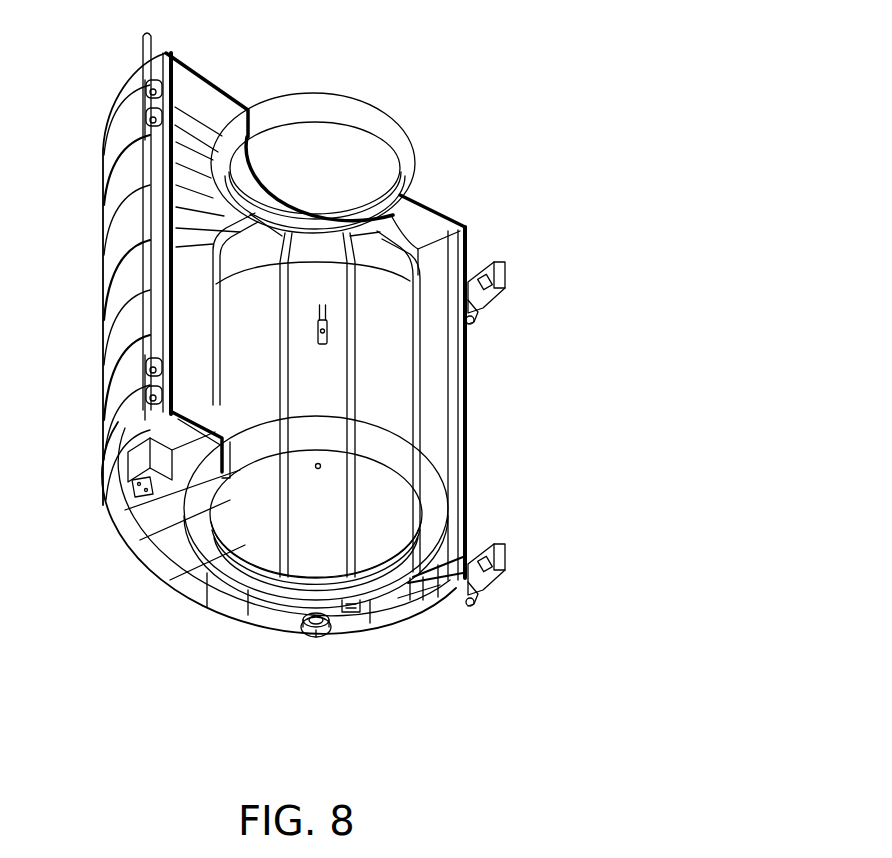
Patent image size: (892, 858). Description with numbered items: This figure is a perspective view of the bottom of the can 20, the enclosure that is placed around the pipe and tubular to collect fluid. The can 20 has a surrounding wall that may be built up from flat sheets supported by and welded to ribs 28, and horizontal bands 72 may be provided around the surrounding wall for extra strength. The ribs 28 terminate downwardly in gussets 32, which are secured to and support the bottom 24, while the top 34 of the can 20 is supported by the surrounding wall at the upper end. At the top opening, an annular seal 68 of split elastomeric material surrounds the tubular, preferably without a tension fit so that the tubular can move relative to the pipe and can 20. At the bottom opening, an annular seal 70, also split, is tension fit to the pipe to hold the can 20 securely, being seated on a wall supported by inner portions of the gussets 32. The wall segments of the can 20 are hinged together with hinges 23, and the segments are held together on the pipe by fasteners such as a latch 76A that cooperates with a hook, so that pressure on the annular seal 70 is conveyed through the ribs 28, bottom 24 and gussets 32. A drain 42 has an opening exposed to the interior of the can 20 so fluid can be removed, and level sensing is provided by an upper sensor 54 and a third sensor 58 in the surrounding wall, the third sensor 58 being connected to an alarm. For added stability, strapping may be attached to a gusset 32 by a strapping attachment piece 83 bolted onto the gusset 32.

The can 20 is at (606, 98).
The hinges 23 is at (148, 87).
The bottom 24 is at (157, 415).
The ribs 28 is at (283, 300).
The gussets 32 is at (158, 455).
The top 34 is at (200, 97).
The drain 42 is at (307, 628).
The upper sensor 54 is at (343, 467).
The third sensor 58 is at (327, 325).
The annular seal 68 is at (296, 105).
The annular seal 70 is at (203, 547).
The horizontal bands 72 is at (105, 176).
The latch 76A is at (503, 272).
The strapping attachment piece 83 is at (130, 486).